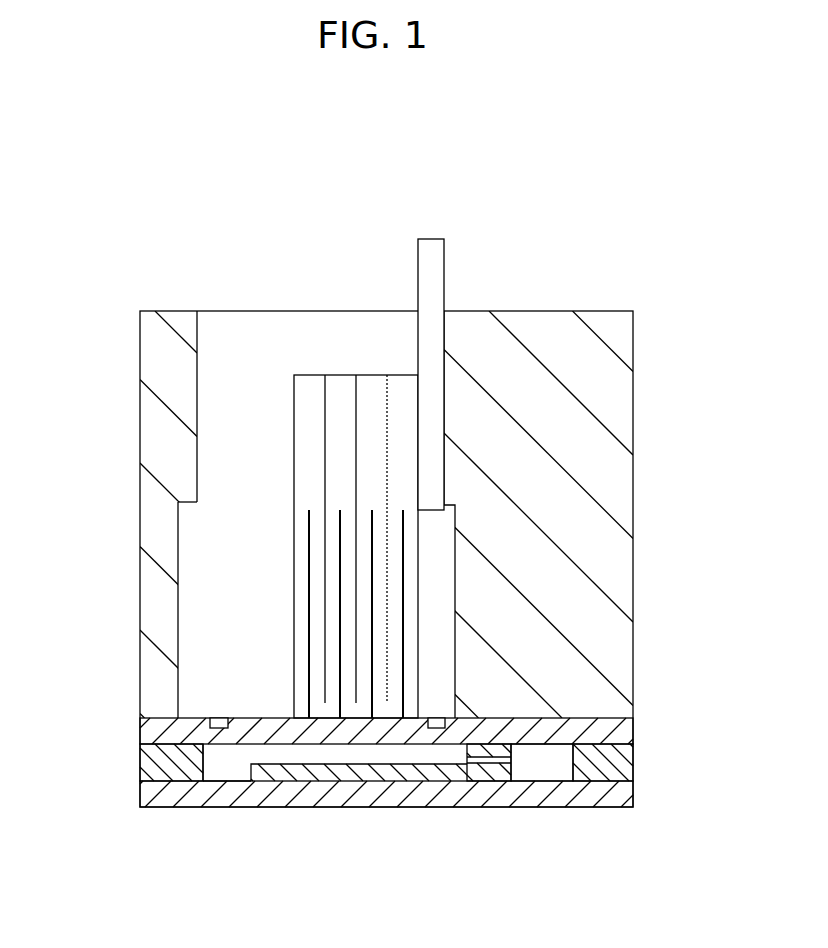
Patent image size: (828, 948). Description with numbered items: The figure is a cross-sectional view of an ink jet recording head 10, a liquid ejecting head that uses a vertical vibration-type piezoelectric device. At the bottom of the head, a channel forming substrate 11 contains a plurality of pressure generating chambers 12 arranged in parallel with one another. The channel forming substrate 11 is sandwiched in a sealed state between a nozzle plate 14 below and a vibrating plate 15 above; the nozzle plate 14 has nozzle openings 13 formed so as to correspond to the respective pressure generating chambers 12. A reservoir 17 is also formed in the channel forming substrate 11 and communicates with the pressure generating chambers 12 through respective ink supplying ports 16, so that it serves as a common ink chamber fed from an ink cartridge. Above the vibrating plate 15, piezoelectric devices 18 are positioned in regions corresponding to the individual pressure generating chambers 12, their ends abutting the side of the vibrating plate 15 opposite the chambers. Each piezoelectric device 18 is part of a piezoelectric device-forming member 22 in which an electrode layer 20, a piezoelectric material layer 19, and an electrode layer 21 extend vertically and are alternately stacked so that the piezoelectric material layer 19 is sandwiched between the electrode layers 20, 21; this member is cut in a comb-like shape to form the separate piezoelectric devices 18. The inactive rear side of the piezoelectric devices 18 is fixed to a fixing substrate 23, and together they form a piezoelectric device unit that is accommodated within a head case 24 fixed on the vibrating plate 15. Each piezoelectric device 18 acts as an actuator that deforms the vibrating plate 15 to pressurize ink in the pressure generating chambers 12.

The ink jet recording head 10 is at (548, 176).
The channel forming substrate 11 is at (148, 766).
The pressure generating chamber 12 is at (362, 755).
The nozzle opening 13 is at (215, 782).
The nozzle plate 14 is at (163, 800).
The vibrating plate 15 is at (170, 739).
The ink supplying port 16 is at (480, 763).
The reservoir 17 is at (543, 762).
The piezoelectric device 18 is at (313, 375).
The piezoelectric material layer 19 is at (318, 520).
The electrode layer 20 is at (242, 512).
The electrode layer 21 is at (327, 567).
The piezoelectric device-forming member 22 is at (300, 614).
The fixing substrate 23 is at (432, 250).
The head case 24 is at (607, 392).